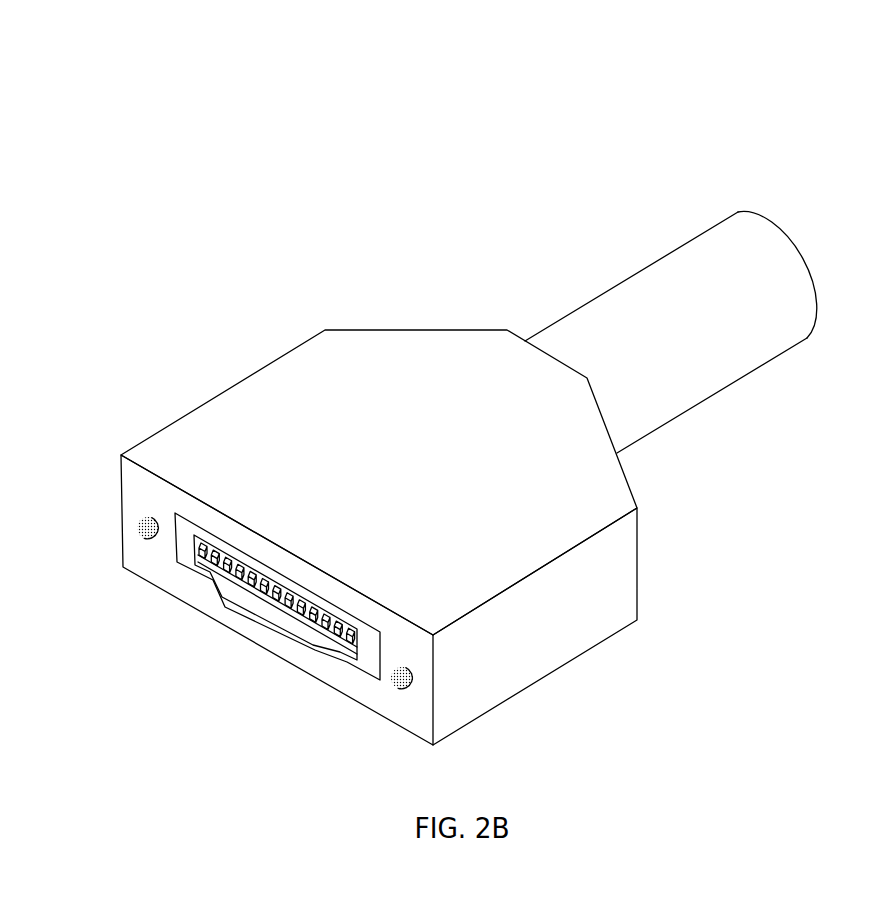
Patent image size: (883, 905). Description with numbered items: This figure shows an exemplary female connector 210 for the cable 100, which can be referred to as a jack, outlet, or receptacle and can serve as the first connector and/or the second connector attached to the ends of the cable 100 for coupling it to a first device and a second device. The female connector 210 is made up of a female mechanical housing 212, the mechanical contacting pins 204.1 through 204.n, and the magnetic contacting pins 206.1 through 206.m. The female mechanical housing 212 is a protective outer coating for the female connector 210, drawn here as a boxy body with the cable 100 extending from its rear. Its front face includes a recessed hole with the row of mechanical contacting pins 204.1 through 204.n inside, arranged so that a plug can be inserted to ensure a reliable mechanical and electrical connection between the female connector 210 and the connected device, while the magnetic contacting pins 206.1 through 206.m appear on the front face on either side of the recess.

The cable 100 is at (739, 211).
The female connector 210 is at (850, 122).
The female mechanical housing 212 is at (375, 329).
The mechanical contacting pin 204.1 is at (204, 557).
The mechanical contacting pin 204.n is at (243, 587).
The magnetic contacting pin 206.1 is at (135, 523).
The magnetic contacting pin 206.m is at (408, 690).